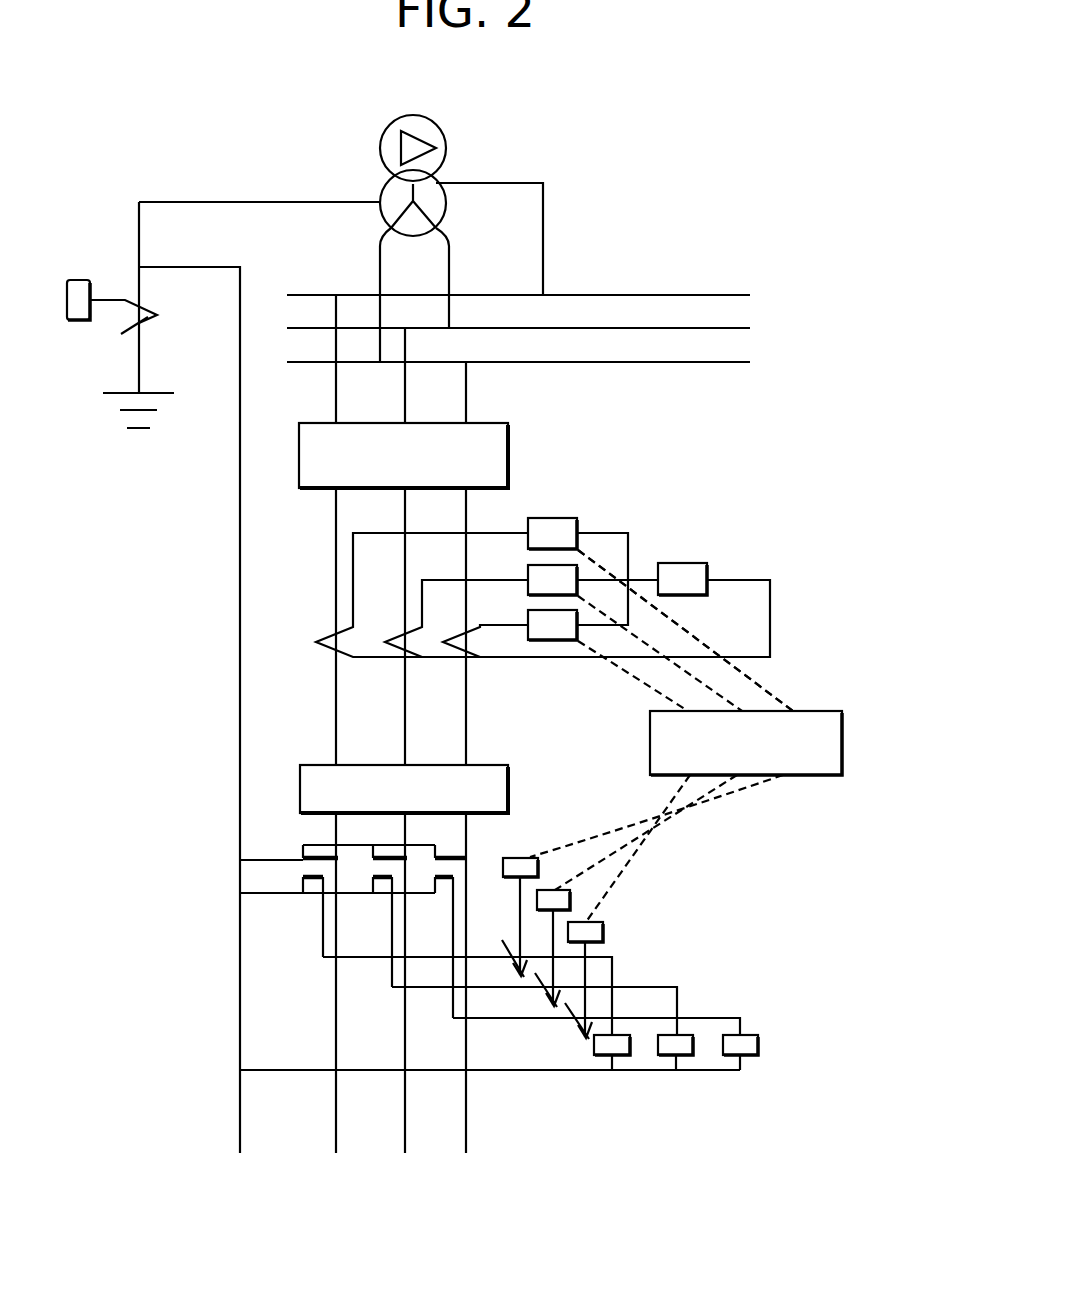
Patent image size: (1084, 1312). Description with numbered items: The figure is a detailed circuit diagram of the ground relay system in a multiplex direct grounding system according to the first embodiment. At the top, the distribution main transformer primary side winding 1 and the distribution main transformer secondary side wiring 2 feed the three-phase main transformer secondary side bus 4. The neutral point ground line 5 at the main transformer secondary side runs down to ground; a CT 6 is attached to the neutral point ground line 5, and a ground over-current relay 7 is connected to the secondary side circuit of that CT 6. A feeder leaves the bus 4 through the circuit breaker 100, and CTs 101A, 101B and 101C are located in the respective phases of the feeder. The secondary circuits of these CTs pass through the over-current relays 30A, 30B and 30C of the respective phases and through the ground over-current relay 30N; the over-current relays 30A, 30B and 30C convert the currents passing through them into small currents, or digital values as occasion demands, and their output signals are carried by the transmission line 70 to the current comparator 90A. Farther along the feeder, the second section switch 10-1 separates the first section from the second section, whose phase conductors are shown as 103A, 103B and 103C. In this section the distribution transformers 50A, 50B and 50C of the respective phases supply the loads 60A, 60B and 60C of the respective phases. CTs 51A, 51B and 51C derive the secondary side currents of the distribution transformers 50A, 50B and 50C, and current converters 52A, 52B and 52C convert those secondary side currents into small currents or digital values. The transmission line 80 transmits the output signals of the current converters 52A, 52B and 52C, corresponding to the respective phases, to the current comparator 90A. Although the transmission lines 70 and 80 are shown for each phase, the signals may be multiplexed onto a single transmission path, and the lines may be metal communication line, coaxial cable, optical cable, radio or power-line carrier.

The distribution main transformer primary side winding 1 is at (447, 148).
The distribution main transformer secondary side wiring 2 is at (447, 203).
The main transformer secondary side bus 4 is at (632, 293).
The neutral point ground line 5 is at (237, 200).
The CT attached to the neutral point ground line 6 is at (123, 297).
The ground over-current relay 7 is at (80, 278).
The circuit breaker 100 is at (510, 453).
The CT 101A is at (333, 638).
The CT 101B is at (396, 634).
The CT 101C is at (457, 636).
The over-current relay 30A is at (580, 528).
The over-current relay 30B is at (580, 570).
The over-current relay 30C is at (580, 617).
The ground over-current relay 30N is at (707, 571).
The transmission line 70 is at (765, 687).
The current comparator 90A is at (843, 741).
The transmission line 80 is at (765, 781).
The second section switch 10-1 is at (510, 790).
The distribution transformer 50A is at (317, 857).
The distribution transformer 50B is at (373, 857).
The distribution transformer 50C is at (440, 863).
The current converter 52A is at (538, 866).
The current converter 52B is at (570, 898).
The current converter 52C is at (603, 930).
The CT 51A is at (510, 958).
The CT 51B is at (540, 990).
The CT 51C is at (573, 1022).
The load 60A is at (616, 1072).
The load 60B is at (684, 1072).
The load 60C is at (748, 1072).
The second section 103A is at (332, 744).
The second section 103B is at (405, 760).
The second section 103C is at (479, 777).